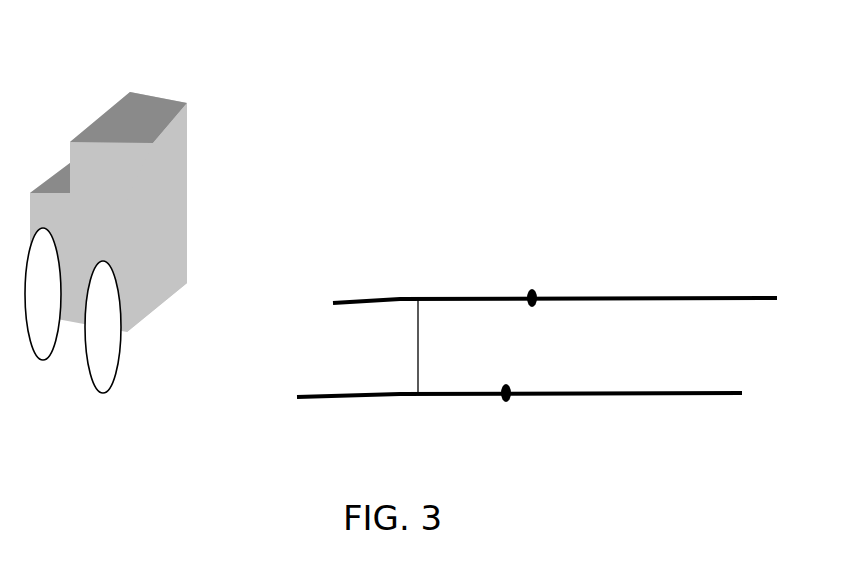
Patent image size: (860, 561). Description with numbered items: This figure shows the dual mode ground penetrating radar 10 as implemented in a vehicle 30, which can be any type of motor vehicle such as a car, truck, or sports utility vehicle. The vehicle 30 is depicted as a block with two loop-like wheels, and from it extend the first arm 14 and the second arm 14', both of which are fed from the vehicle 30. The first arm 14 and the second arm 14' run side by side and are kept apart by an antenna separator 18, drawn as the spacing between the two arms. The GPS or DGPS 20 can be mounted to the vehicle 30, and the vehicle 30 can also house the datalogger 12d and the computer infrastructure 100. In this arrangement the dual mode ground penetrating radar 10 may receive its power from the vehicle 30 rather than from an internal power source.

The dual mode ground penetrating radar 10 is at (143, 143).
The datalogger 12d is at (333, 303).
The first arm 14 is at (555, 280).
The second arm 14' is at (519, 430).
The antenna separator 18 is at (440, 346).
The GPS or DGPS 20 is at (103, 143).
The vehicle 30 is at (89, 384).
The computer infrastructure 100 is at (297, 397).